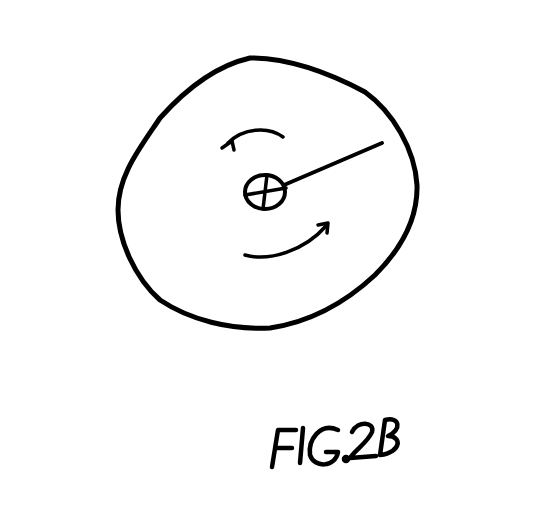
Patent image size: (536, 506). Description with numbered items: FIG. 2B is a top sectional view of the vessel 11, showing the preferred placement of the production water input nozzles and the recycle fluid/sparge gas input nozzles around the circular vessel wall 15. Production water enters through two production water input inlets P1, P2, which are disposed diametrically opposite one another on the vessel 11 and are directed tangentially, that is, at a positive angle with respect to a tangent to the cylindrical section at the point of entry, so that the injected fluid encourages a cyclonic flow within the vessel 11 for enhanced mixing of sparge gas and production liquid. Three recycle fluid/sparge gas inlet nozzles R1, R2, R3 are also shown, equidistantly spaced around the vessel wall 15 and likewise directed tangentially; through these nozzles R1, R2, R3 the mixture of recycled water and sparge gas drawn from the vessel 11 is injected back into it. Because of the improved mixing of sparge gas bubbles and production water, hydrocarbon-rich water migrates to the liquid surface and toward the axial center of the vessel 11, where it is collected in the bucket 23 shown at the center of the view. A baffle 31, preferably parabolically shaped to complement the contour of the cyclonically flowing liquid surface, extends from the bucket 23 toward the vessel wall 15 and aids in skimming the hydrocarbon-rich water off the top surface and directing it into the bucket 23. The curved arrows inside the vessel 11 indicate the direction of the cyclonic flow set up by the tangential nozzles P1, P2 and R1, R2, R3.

The vessel 11 is at (430, 22).
The vessel wall 15 is at (125, 180).
The bucket 23 is at (237, 183).
The baffle 31 is at (325, 160).
The recycle fluid/sparge gas inlet nozzle R1 is at (318, 58).
The recycle fluid/sparge gas inlet nozzle R2 is at (80, 240).
The recycle fluid/sparge gas inlet nozzle R3 is at (385, 338).
The production water input inlet P1 is at (122, 74).
The production water input inlet P2 is at (458, 270).